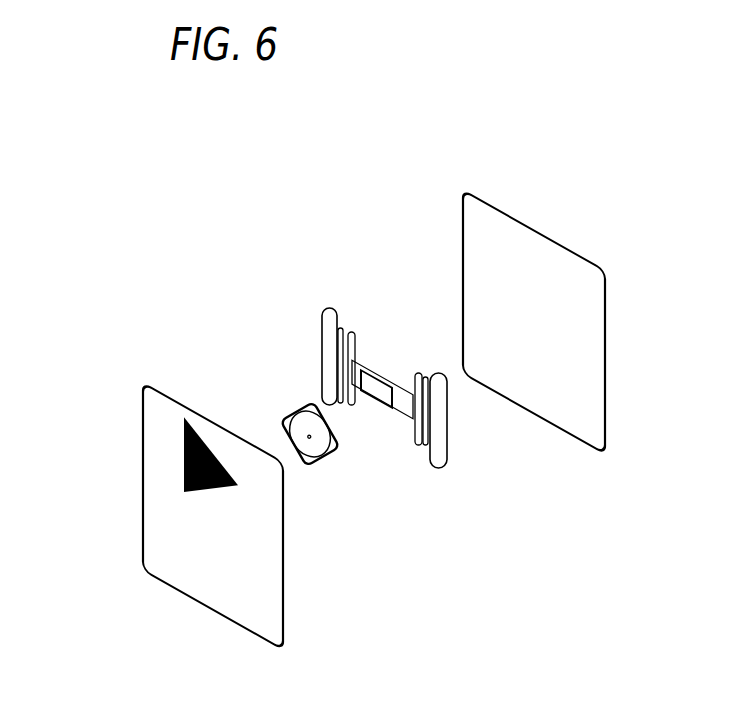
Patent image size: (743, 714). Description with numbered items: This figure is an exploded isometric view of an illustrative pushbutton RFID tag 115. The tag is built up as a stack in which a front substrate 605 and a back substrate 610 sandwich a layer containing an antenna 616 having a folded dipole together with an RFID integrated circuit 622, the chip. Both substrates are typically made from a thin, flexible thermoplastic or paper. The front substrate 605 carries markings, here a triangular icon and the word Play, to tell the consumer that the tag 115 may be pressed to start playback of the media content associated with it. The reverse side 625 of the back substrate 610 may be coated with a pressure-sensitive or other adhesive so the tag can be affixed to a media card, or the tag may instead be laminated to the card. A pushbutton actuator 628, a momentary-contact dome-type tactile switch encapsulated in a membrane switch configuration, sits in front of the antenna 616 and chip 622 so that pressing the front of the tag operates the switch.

The pushbutton RFID tag 115 is at (257, 166).
The front substrate 605 is at (147, 383).
The back substrate 610 is at (466, 190).
The antenna 616 is at (331, 308).
The RFID integrated circuit 622 is at (377, 387).
The reverse side 625 is at (538, 303).
The pushbutton actuator 628 is at (292, 405).